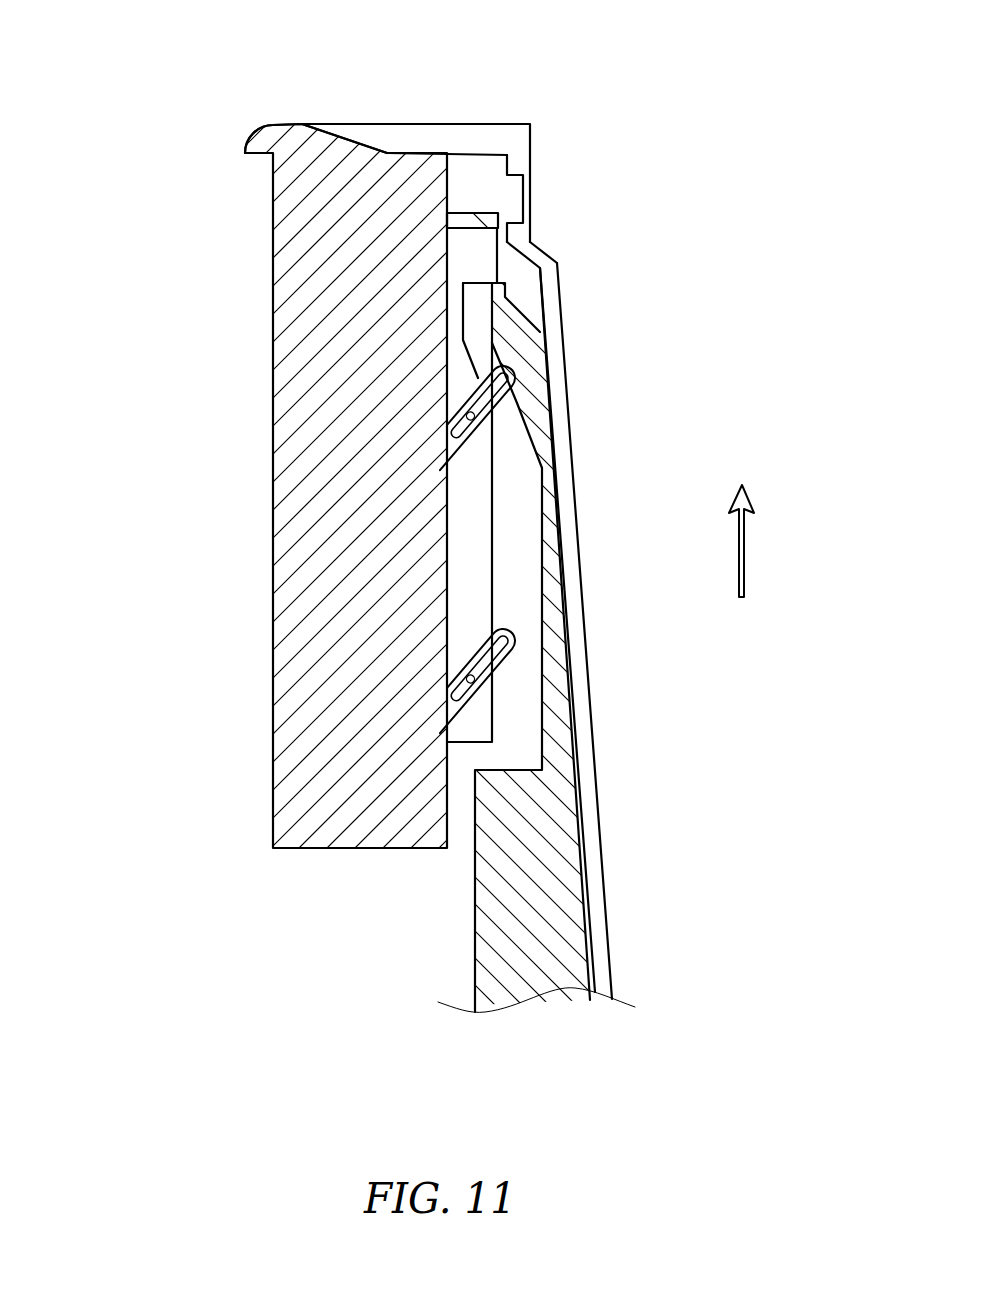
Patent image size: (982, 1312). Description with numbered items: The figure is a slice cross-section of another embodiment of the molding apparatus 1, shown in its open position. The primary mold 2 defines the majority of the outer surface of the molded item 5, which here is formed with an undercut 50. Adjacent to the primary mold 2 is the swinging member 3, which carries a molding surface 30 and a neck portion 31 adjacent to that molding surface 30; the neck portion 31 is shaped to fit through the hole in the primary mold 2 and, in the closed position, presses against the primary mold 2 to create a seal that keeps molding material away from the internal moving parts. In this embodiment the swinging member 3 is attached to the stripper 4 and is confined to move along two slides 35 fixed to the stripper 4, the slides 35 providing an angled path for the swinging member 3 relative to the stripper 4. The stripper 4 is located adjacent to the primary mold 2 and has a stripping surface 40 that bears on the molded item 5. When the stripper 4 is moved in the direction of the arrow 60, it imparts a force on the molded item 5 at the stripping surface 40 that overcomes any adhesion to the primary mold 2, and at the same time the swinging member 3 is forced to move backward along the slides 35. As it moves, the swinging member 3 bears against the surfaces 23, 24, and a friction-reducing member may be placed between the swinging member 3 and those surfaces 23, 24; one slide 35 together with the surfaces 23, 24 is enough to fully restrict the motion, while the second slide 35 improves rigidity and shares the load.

The molding apparatus 1 is at (174, 92).
The primary mold 2 is at (470, 228).
The swinging member 3 is at (473, 483).
The stripper 4 is at (320, 458).
The molded item 5 is at (553, 325).
The surface 23 is at (543, 262).
The surface 24 is at (498, 284).
The molding surface 30 is at (480, 233).
The neck portion 31 is at (467, 264).
The slide 35 is at (465, 398).
The stripping surface 40 is at (347, 140).
The undercut 50 is at (527, 200).
The arrow 60 is at (762, 541).